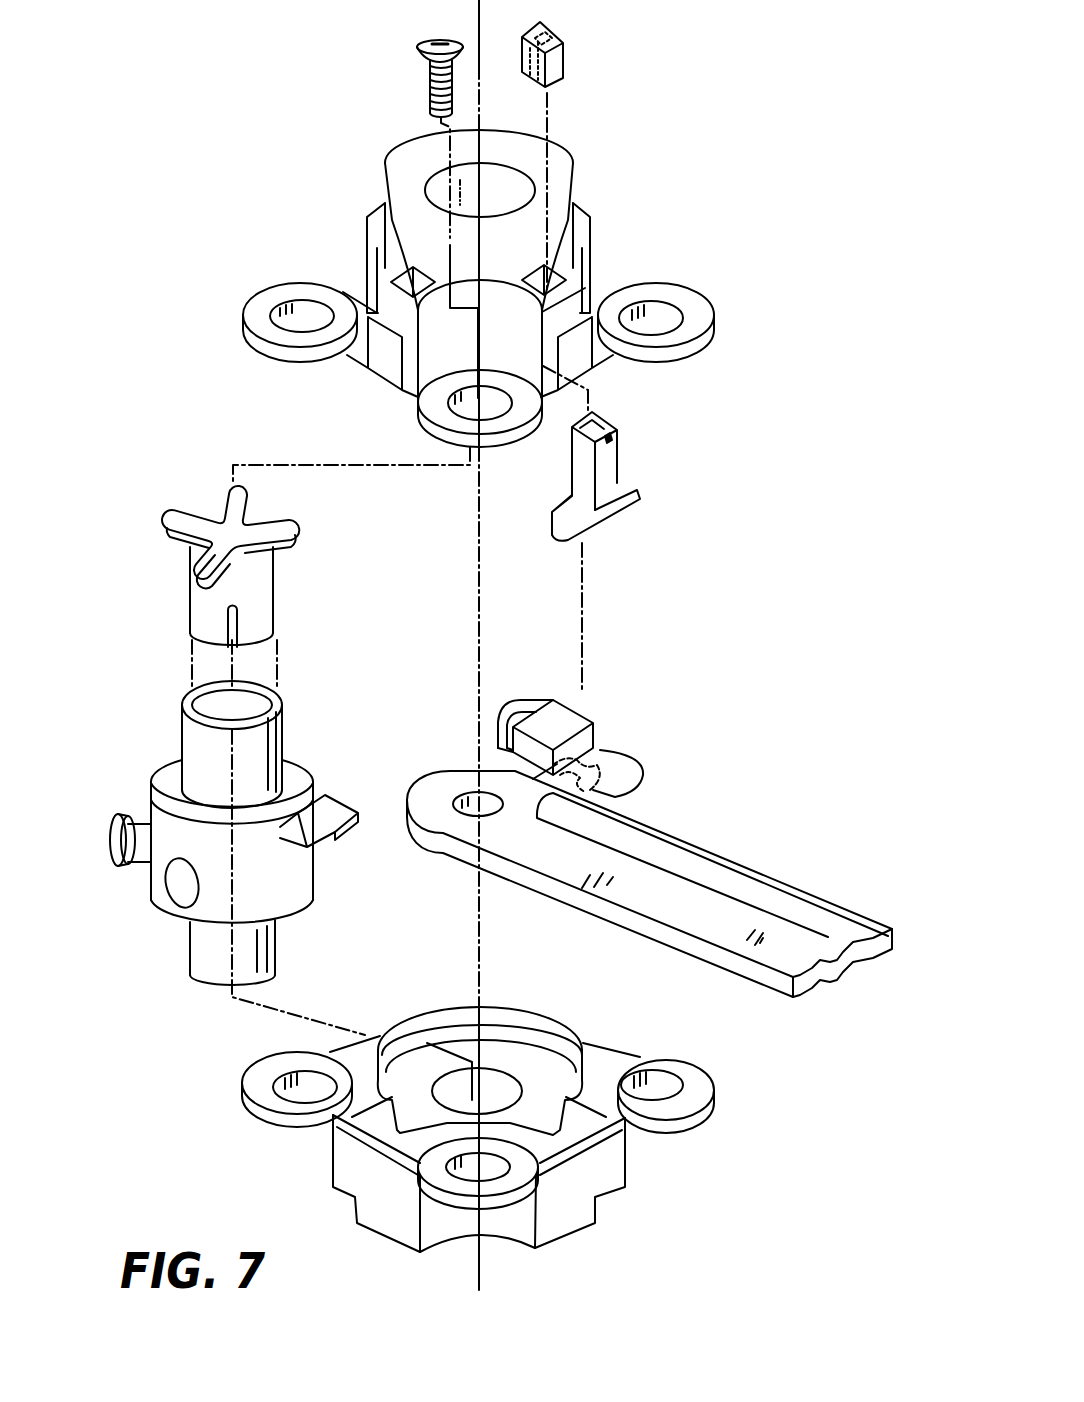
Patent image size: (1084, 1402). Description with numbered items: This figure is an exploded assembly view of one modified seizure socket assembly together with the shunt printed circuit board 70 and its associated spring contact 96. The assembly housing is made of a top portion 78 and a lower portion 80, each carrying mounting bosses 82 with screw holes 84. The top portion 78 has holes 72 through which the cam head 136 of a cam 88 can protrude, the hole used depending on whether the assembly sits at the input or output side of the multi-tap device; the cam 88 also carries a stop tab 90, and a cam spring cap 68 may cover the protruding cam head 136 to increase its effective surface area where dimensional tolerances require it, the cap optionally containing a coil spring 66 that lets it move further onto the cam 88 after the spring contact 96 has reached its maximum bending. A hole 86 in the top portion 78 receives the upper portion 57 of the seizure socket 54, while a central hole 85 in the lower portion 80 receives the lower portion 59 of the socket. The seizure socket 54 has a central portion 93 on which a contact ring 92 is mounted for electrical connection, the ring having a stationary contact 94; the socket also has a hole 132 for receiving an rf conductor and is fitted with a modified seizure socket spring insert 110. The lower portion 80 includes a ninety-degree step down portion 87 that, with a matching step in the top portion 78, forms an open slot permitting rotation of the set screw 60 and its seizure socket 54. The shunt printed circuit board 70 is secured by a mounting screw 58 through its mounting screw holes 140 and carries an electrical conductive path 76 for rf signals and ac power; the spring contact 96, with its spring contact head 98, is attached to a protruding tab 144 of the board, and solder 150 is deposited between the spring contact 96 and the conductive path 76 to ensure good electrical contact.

The seizure socket 54 is at (225, 833).
The upper portion of seizure socket 57 is at (282, 723).
The mounting screw 58 is at (430, 81).
The lower portion of seizure socket 59 is at (217, 950).
The set screw 60 is at (115, 853).
The coil spring 66 is at (574, 56).
The cam spring cap 68 is at (565, 51).
The shunt printed circuit board 70 is at (457, 842).
The holes 72 is at (408, 275).
The electrical conductive path 76 is at (638, 845).
The top portion of socket assembly housing 78 is at (572, 161).
The lower portion of socket assembly housing 80 is at (538, 1111).
The mounting bosses 82 is at (262, 312).
The screw holes 84 is at (310, 310).
The central hole 85 is at (457, 1092).
The hole 86 is at (432, 186).
The step down portion 87 is at (495, 1010).
The cam 88 is at (644, 467).
The stop tab 90 is at (612, 440).
The contact ring 92 is at (292, 772).
The central portion of seizure socket 93 is at (158, 892).
The stationary contact 94 is at (323, 803).
The spring contact 96 is at (564, 719).
The spring contact head 98 is at (543, 703).
The modified seizure socket spring insert 110 is at (183, 590).
The hole for receiving an rf conductor 132 is at (183, 887).
The cam head 136 is at (590, 423).
The mounting screw holes 140 is at (468, 800).
The protruding tab 144 is at (625, 800).
The solder 150 is at (593, 753).